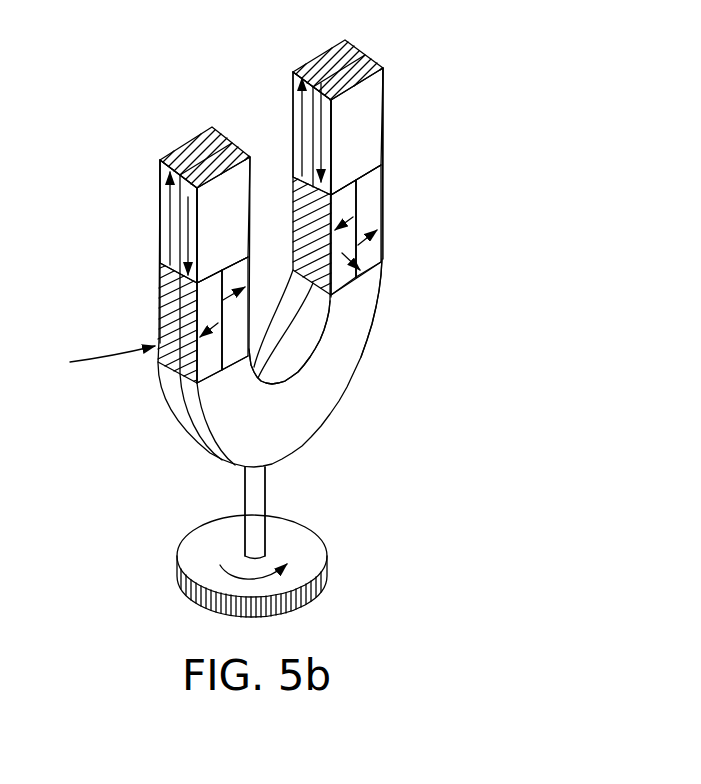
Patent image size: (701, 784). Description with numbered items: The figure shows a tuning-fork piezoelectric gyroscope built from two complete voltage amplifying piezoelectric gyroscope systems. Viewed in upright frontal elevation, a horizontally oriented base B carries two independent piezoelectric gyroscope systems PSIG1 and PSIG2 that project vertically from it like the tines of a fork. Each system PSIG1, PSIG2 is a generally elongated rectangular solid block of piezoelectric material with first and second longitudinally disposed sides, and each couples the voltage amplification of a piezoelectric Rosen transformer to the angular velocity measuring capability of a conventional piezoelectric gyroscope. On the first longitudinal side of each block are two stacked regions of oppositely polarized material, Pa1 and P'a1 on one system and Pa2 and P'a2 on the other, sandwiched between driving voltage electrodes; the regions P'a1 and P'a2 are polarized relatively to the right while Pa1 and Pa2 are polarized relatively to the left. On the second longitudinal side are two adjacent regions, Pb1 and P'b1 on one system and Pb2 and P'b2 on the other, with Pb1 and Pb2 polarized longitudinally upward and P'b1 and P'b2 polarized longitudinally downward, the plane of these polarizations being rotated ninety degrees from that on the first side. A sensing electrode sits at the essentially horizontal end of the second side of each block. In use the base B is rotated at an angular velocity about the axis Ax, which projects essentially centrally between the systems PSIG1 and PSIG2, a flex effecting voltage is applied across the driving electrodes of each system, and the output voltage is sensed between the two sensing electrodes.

The adjacent region of oppositely oriented polarization direction material Pb1 is at (163, 191).
The adjacent region of oppositely oriented polarization direction material P'b1 is at (162, 220).
The independent piezoelectric gyroscope system PSIG1 is at (140, 252).
The stacked region of oppositely oriented polarization direction material Pa1 is at (208, 302).
The stacked region of oppositely oriented polarization direction material P'a1 is at (152, 337).
The adjacent region of oppositely oriented polarization direction material Pb2 is at (364, 43).
The adjacent region of oppositely oriented polarization direction material P'b2 is at (427, 131).
The independent piezoelectric gyroscope system PSIG2 is at (406, 147).
The stacked region of oppositely oriented polarization direction material Pa2 is at (353, 271).
The stacked region of oppositely oriented polarization direction material P'a2 is at (424, 221).
The axis Ax is at (240, 538).
The base B is at (349, 527).